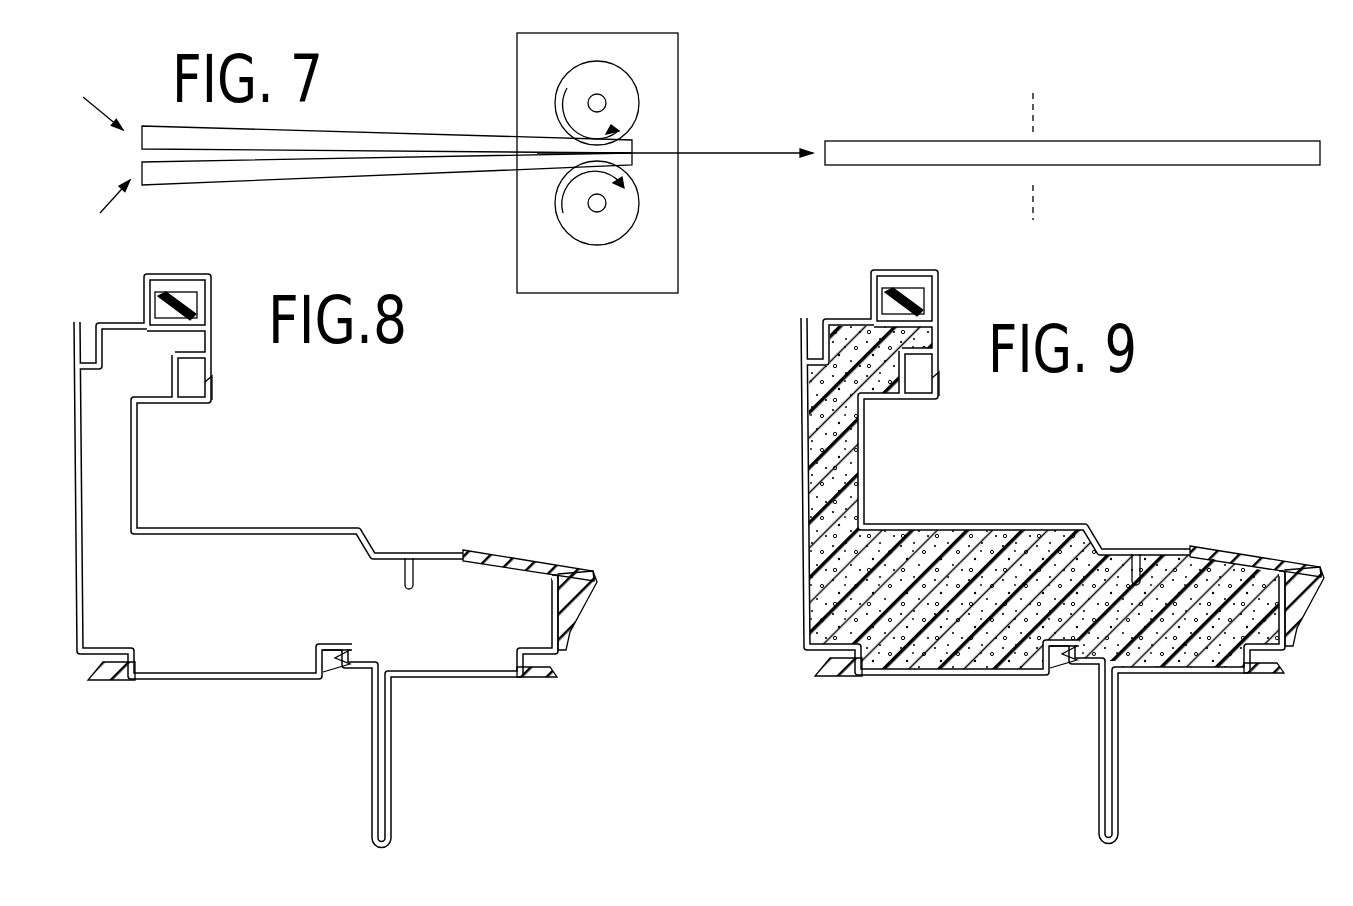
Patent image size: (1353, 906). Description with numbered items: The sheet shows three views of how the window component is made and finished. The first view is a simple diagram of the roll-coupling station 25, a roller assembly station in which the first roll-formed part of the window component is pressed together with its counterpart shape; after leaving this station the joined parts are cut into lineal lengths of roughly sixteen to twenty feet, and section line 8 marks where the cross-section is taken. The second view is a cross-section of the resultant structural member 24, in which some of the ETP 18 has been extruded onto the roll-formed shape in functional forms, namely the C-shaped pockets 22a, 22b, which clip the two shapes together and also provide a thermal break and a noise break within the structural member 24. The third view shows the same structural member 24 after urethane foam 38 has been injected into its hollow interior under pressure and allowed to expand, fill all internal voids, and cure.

In FIG. 7, the roll-coupling station 25 is at (660, 33).
In FIG. 7, the section line 8- 8 is at (1048, 108).
In FIG. 8, the ETP 18 is at (537, 560).
In FIG. 9, the ETP 18 is at (1257, 571).
In FIG. 8, the C-shaped pocket 22a is at (175, 273).
In FIG. 9, the C-shaped pocket 22a is at (903, 302).
In FIG. 8, the C-shaped pocket 22b is at (327, 678).
In FIG. 9, the C-shaped pocket 22b is at (1063, 657).
In FIG. 8, the structural member 24 is at (183, 678).
In FIG. 9, the structural member 24 is at (1000, 557).
In FIG. 9, the foam 38 is at (1044, 534).